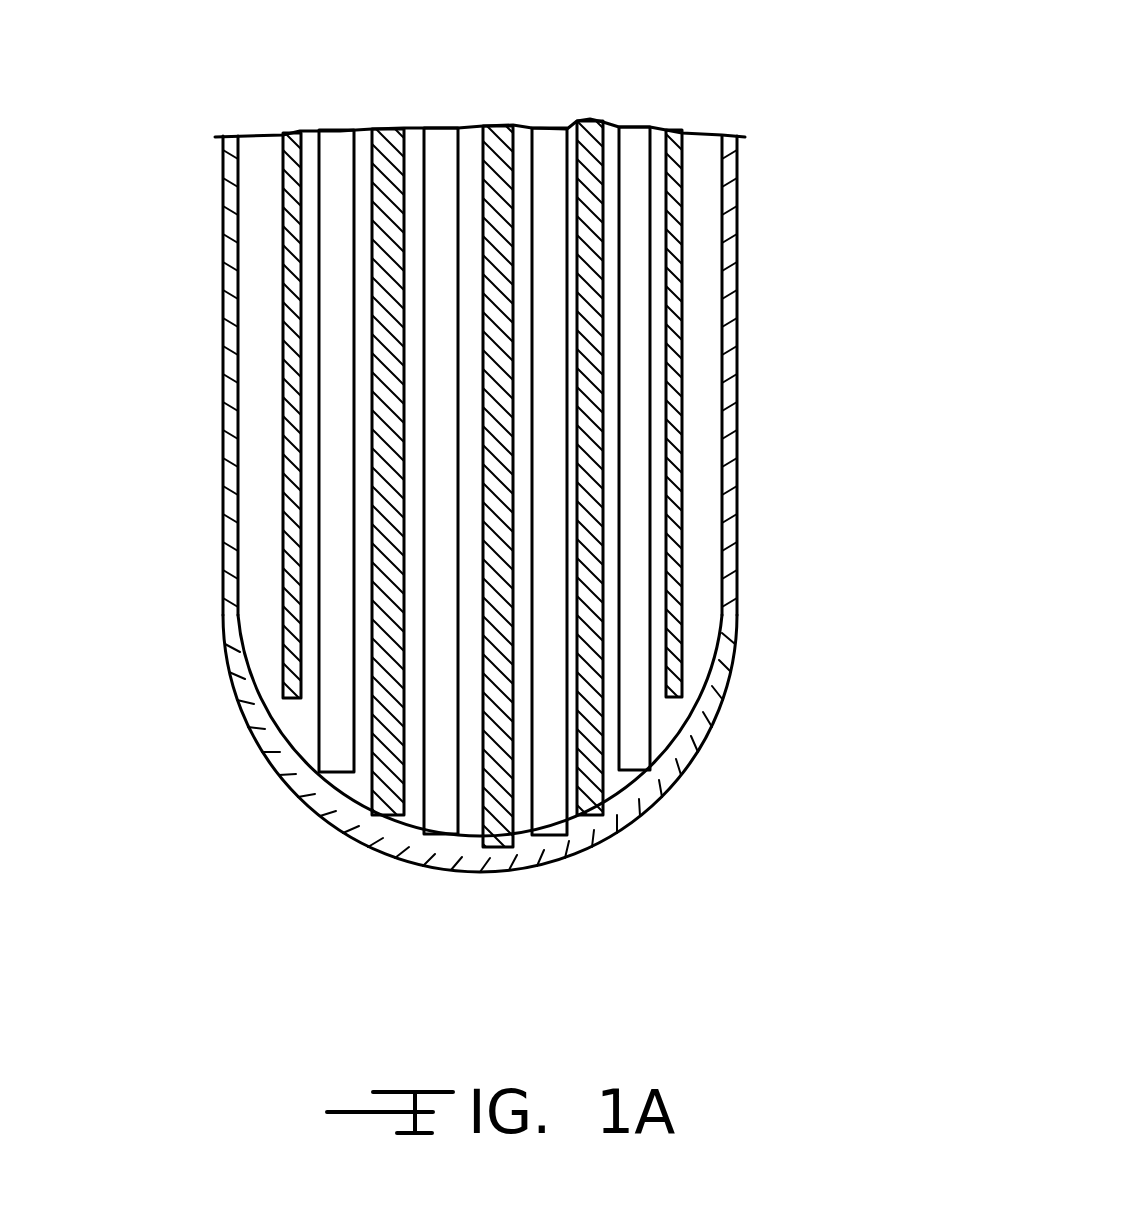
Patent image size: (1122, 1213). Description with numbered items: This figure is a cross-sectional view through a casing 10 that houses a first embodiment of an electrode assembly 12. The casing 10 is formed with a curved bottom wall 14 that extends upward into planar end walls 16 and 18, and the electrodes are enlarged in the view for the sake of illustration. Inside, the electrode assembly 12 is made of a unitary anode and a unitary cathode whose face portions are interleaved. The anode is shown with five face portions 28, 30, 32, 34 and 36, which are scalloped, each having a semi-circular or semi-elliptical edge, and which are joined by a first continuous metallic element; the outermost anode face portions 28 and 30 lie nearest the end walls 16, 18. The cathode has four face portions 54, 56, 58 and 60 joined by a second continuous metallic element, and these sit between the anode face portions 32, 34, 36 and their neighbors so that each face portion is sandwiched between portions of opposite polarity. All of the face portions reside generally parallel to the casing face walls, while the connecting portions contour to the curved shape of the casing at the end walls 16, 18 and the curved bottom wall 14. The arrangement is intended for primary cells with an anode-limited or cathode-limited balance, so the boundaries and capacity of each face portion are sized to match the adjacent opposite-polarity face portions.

The casing 10 is at (774, 160).
The electrode assembly 12 is at (537, 552).
The curved bottom wall 14 is at (240, 700).
The end wall 16 is at (738, 347).
The end wall 18 is at (223, 388).
The anode face portion 28 is at (683, 690).
The anode face portion 30 is at (287, 700).
The anode face portion 32 is at (590, 815).
The anode face portion 34 is at (383, 815).
The anode face portion 36 is at (496, 847).
The cathode face portion 54 is at (637, 772).
The cathode face portion 56 is at (320, 773).
The cathode face portion 58 is at (553, 835).
The cathode face portion 60 is at (445, 834).